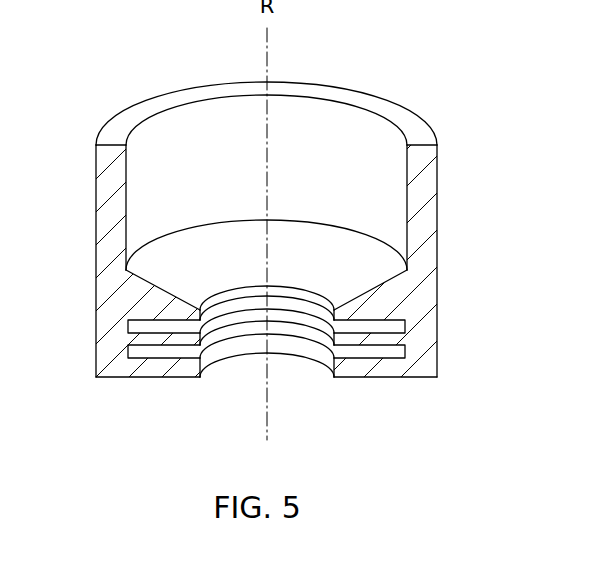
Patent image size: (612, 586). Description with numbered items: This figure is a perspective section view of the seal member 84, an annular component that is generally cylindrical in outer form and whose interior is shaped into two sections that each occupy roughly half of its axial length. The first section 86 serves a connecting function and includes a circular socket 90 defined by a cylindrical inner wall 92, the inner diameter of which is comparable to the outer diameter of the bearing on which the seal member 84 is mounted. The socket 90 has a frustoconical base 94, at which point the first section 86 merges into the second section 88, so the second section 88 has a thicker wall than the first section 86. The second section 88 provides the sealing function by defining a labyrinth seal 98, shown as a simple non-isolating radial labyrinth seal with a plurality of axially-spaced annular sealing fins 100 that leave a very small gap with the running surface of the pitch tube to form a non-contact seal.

The seal member 84 is at (463, 74).
The first section 86 is at (455, 172).
The second section 88 is at (456, 318).
The circular socket 90 is at (141, 123).
The cylindrical inner wall 92 is at (150, 162).
The frustoconical base 94 is at (157, 258).
The labyrinth seal 98 is at (298, 382).
The sealing fins 100 is at (202, 368).